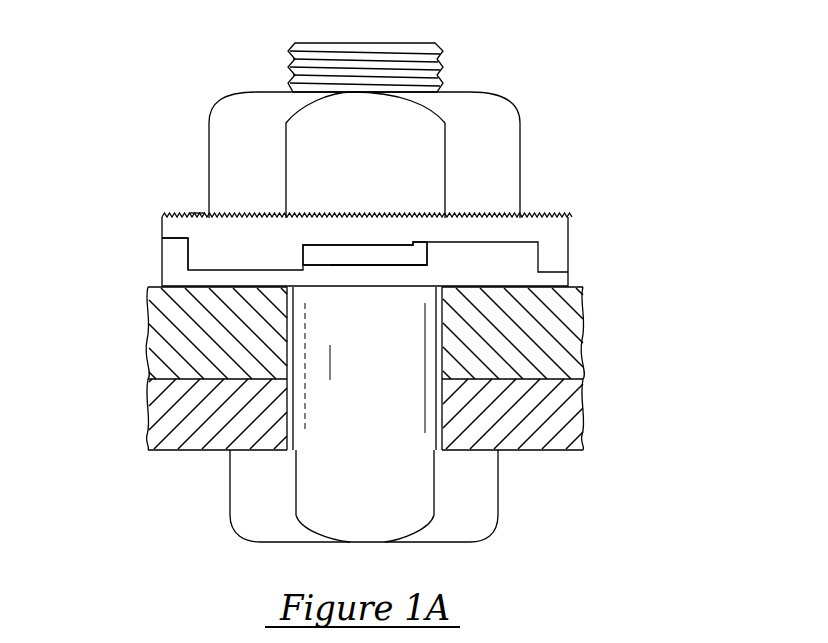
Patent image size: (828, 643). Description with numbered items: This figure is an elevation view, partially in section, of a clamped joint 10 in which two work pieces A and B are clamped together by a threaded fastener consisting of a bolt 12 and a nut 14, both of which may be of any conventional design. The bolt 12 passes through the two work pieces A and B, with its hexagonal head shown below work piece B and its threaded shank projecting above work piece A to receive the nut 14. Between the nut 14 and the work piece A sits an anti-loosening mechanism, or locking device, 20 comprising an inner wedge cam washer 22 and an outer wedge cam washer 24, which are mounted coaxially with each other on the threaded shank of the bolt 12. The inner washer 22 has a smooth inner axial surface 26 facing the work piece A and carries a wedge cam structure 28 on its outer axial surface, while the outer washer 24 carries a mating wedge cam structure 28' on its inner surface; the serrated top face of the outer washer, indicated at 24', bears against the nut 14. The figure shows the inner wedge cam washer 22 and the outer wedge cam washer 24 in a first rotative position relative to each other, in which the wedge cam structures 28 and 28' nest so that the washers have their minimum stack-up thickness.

The clamped joint 10 is at (587, 99).
The bolt 12 is at (503, 495).
The nut 14 is at (504, 162).
The anti-loosening mechanism 20 is at (571, 252).
The inner wedge cam washer 22 is at (170, 265).
The outer wedge cam washer 24 is at (327, 231).
The serrations 24' is at (165, 185).
The smooth inner axial surface 26 is at (323, 288).
The wedge cam structure 28 is at (365, 200).
The wedge cam structure 28' is at (378, 316).
The work piece A is at (583, 325).
The work piece B is at (583, 407).